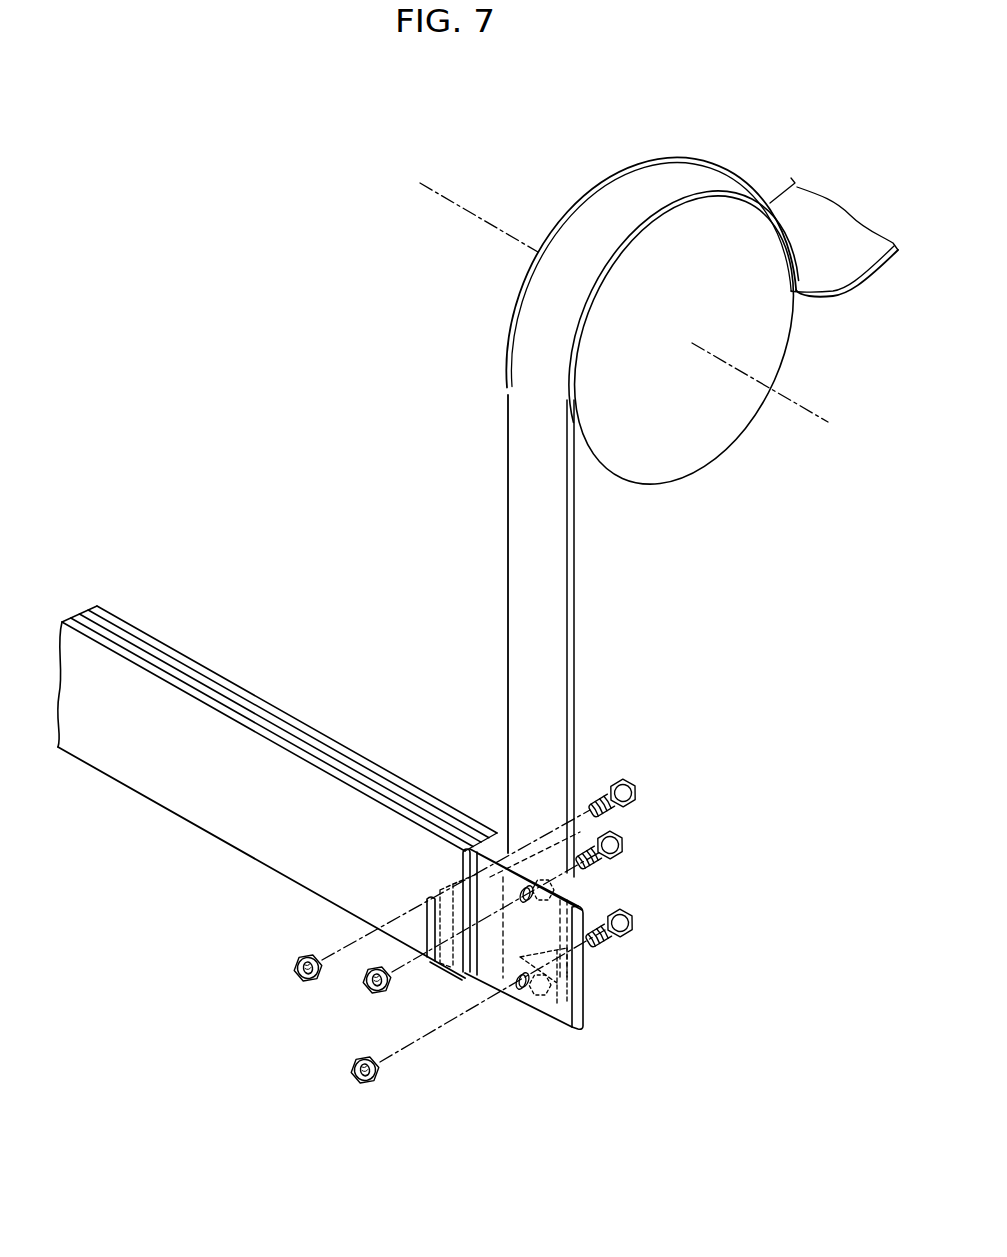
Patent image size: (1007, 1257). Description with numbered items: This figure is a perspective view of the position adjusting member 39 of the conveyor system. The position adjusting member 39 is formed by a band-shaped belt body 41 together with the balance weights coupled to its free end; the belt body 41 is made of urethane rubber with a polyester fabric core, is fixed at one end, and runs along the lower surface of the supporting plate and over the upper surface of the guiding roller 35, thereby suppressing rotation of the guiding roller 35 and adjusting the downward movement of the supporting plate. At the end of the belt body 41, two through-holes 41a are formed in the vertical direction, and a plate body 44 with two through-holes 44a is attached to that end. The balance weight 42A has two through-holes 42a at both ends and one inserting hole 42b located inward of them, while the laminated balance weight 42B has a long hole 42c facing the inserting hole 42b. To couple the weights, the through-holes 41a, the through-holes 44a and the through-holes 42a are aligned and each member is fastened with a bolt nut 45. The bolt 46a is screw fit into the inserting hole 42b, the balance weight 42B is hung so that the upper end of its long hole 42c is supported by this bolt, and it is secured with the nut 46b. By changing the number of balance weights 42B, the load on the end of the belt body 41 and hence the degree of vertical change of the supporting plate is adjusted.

The guiding roller 35 is at (675, 457).
The position adjusting member 39 is at (381, 582).
The belt body 41 is at (550, 627).
The through-hole 41a is at (557, 983).
The balance weight 42A is at (520, 888).
The balance weight 42B is at (220, 677).
The through-hole 42a is at (517, 997).
The inserting hole 42b is at (440, 890).
The long hole 42c is at (422, 960).
The plate body 44 is at (572, 880).
The through-hole 44a is at (540, 995).
The bolt nut 45 is at (623, 848).
The bolt 46a is at (623, 780).
The nut 46b is at (292, 968).